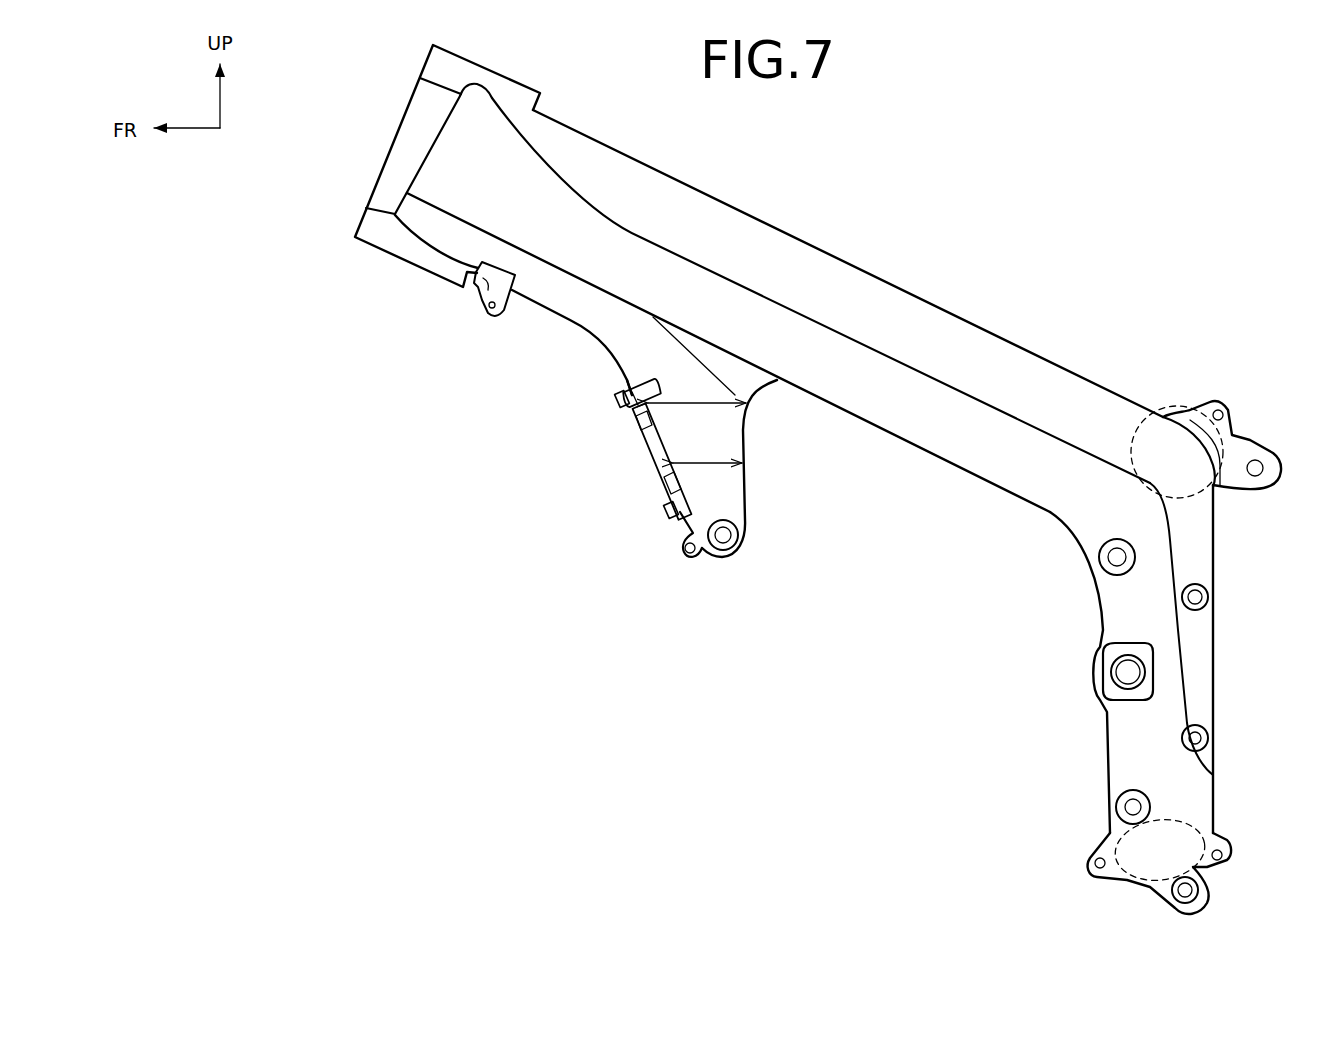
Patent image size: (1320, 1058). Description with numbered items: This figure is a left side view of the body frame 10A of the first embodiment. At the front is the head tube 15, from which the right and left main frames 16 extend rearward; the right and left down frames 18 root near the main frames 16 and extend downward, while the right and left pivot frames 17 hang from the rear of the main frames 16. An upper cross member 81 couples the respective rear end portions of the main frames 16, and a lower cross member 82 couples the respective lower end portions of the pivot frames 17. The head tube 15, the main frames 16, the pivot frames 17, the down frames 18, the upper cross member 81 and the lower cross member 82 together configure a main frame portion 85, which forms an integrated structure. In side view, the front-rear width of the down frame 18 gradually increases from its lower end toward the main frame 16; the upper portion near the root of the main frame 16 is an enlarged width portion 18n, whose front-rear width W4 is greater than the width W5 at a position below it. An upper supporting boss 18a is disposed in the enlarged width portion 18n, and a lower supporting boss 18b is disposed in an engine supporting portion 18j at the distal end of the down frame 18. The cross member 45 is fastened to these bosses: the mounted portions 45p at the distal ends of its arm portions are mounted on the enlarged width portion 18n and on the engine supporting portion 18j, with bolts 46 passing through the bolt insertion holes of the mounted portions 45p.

The body frame 10A is at (388, 90).
The head tube 15 is at (382, 183).
The main frame portion 85 is at (400, 138).
The main frame 16 is at (832, 263).
The down frame 18 is at (748, 487).
The enlarged width portion 18n is at (721, 386).
The upper supporting boss 18a is at (622, 376).
The lower supporting boss 18b is at (683, 522).
The engine supporting portion 18j is at (725, 558).
The cross member 45 is at (646, 455).
The mounted portion 45p is at (621, 398).
The bolt 46 is at (621, 403).
The pivot frame 17 is at (1202, 657).
The upper cross member 81 is at (1142, 404).
The lower cross member 82 is at (1183, 820).
The width of enlarged width portion W4 is at (697, 391).
The width below enlarged width portion W5 is at (707, 448).